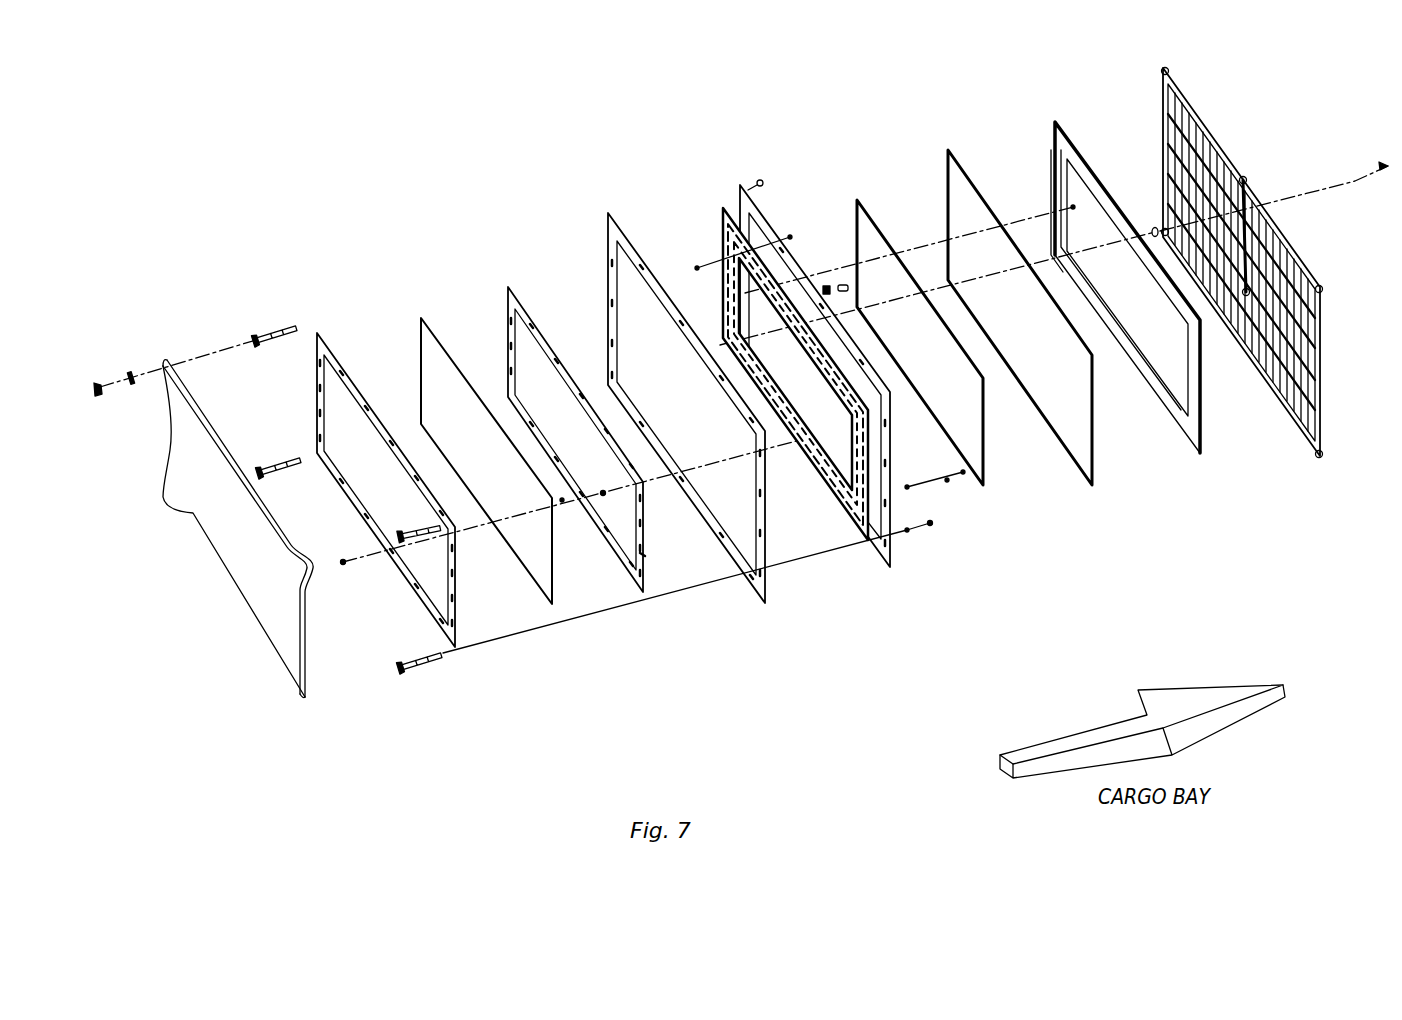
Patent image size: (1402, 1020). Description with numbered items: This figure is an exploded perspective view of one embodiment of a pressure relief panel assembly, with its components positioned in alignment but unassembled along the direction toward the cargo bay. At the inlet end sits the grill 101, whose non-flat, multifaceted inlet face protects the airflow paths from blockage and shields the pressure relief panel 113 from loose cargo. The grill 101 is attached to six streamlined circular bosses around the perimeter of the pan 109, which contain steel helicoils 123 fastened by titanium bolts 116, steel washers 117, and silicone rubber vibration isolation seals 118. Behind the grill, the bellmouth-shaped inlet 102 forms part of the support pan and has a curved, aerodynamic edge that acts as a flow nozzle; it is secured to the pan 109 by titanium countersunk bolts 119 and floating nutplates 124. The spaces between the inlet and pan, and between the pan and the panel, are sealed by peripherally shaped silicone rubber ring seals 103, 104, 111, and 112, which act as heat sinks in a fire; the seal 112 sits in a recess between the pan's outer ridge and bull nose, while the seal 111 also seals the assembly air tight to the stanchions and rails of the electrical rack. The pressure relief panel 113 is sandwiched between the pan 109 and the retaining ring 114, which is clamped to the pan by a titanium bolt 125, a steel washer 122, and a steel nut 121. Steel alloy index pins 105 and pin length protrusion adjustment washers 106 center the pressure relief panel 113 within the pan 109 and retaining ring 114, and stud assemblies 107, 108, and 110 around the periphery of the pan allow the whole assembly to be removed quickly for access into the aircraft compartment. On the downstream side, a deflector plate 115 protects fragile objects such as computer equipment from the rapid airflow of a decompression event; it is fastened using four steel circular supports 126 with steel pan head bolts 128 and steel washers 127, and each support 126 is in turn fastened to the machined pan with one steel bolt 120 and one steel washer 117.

The grill 101 is at (1323, 332).
The bellmouth-shaped inlet 102 is at (1203, 400).
The silicone rubber ring seal 103 is at (1093, 458).
The silicone rubber ring seal 104 is at (987, 435).
The index pin 105 is at (963, 473).
The pin length protrusion adjustment washer 106 is at (947, 481).
The stud assembly 107 is at (848, 287).
The stud assembly 108 is at (826, 287).
The pan 109 is at (876, 548).
The stud assembly 110 is at (700, 325).
The seal 111 is at (752, 593).
The rubber seal 112 is at (650, 556).
The pressure relief panel 113 is at (538, 597).
The retaining ring 114 is at (413, 600).
The deflector plate 115 is at (295, 682).
The titanium bolt 116 is at (1388, 162).
The steel washer 117 is at (375, 565).
The silicone rubber vibration isolation seal 118 is at (1155, 228).
The titanium countersunk bolt 119 is at (1073, 207).
The steel bolt 120 is at (930, 525).
The steel nut 121 is at (645, 557).
The steel washer 122 is at (603, 494).
The steel helicoil 123 is at (760, 180).
The floating nutplate 124 is at (697, 266).
The titanium bolt 125 is at (343, 565).
The deflector plate support 126 is at (260, 337).
The steel washer 127 is at (131, 372).
The steel pan head bolt 128 is at (95, 385).